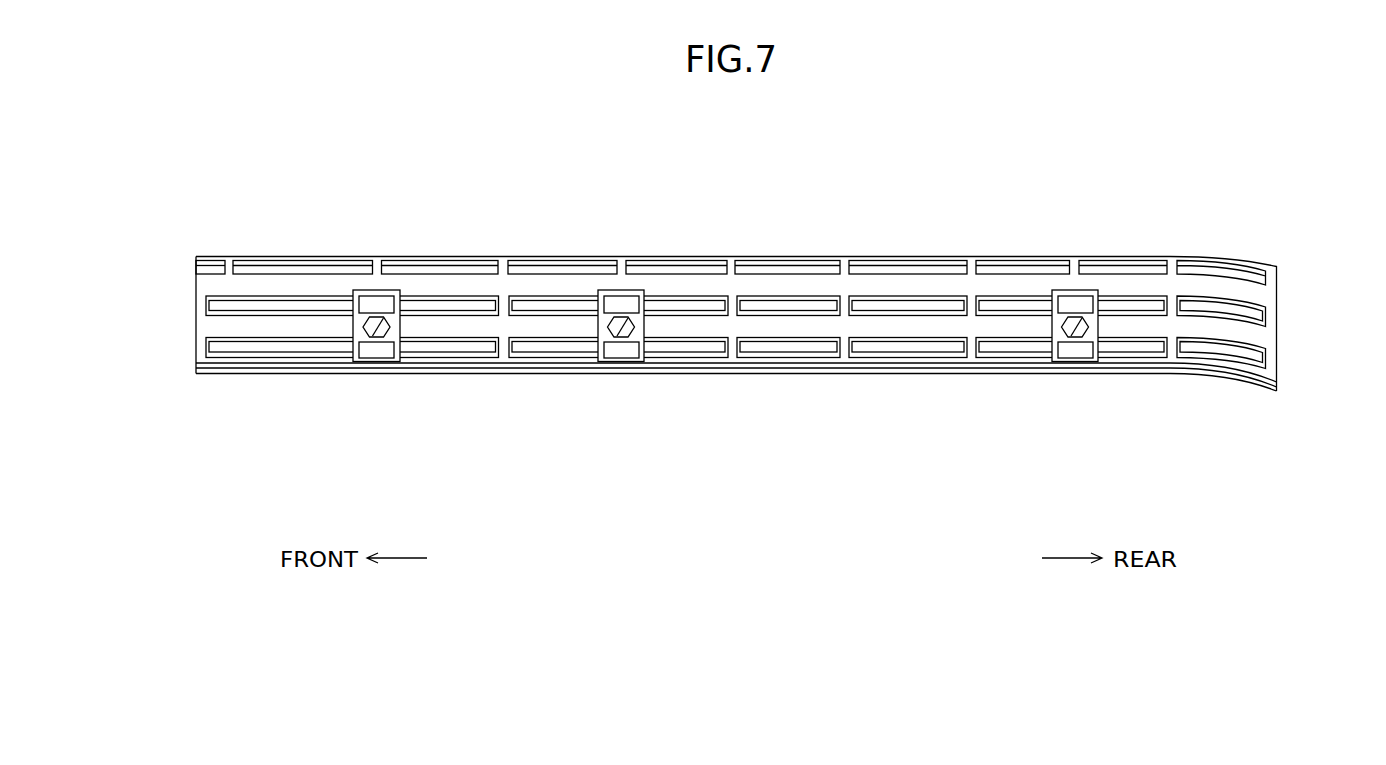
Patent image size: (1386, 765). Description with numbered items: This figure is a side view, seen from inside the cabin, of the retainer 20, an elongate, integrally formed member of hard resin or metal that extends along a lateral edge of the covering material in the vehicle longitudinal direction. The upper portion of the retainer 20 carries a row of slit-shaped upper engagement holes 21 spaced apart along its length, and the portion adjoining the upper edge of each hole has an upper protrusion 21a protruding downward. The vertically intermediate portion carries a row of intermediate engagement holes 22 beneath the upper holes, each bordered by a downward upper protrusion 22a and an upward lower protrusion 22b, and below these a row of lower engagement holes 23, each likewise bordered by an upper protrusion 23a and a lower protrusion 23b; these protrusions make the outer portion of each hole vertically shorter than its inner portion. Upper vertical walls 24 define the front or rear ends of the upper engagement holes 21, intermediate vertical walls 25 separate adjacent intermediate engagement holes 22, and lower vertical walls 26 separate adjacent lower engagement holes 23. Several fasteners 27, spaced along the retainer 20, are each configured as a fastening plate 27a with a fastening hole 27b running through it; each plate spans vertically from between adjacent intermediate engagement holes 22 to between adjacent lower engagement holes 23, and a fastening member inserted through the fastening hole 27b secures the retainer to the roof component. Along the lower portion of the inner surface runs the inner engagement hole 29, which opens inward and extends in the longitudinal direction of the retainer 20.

The retainer 20 is at (736, 322).
The upper engagement hole 21 is at (327, 263).
The upper protrusion 21a is at (745, 263).
The intermediate engagement hole 22 is at (273, 297).
The upper protrusion 22a is at (916, 302).
The lower protrusion 22b is at (937, 310).
The lower engagement hole 23 is at (233, 353).
The upper protrusion 23a is at (870, 345).
The lower protrusion 23b is at (902, 353).
The upper vertical wall 24 is at (223, 264).
The intermediate vertical wall 25 is at (206, 307).
The lower vertical wall 26 is at (206, 348).
The fastener 27 is at (722, 369).
The fastening plate 27a is at (393, 333).
The fastening hole 27b is at (379, 328).
The inner engagement hole 29 is at (1227, 373).